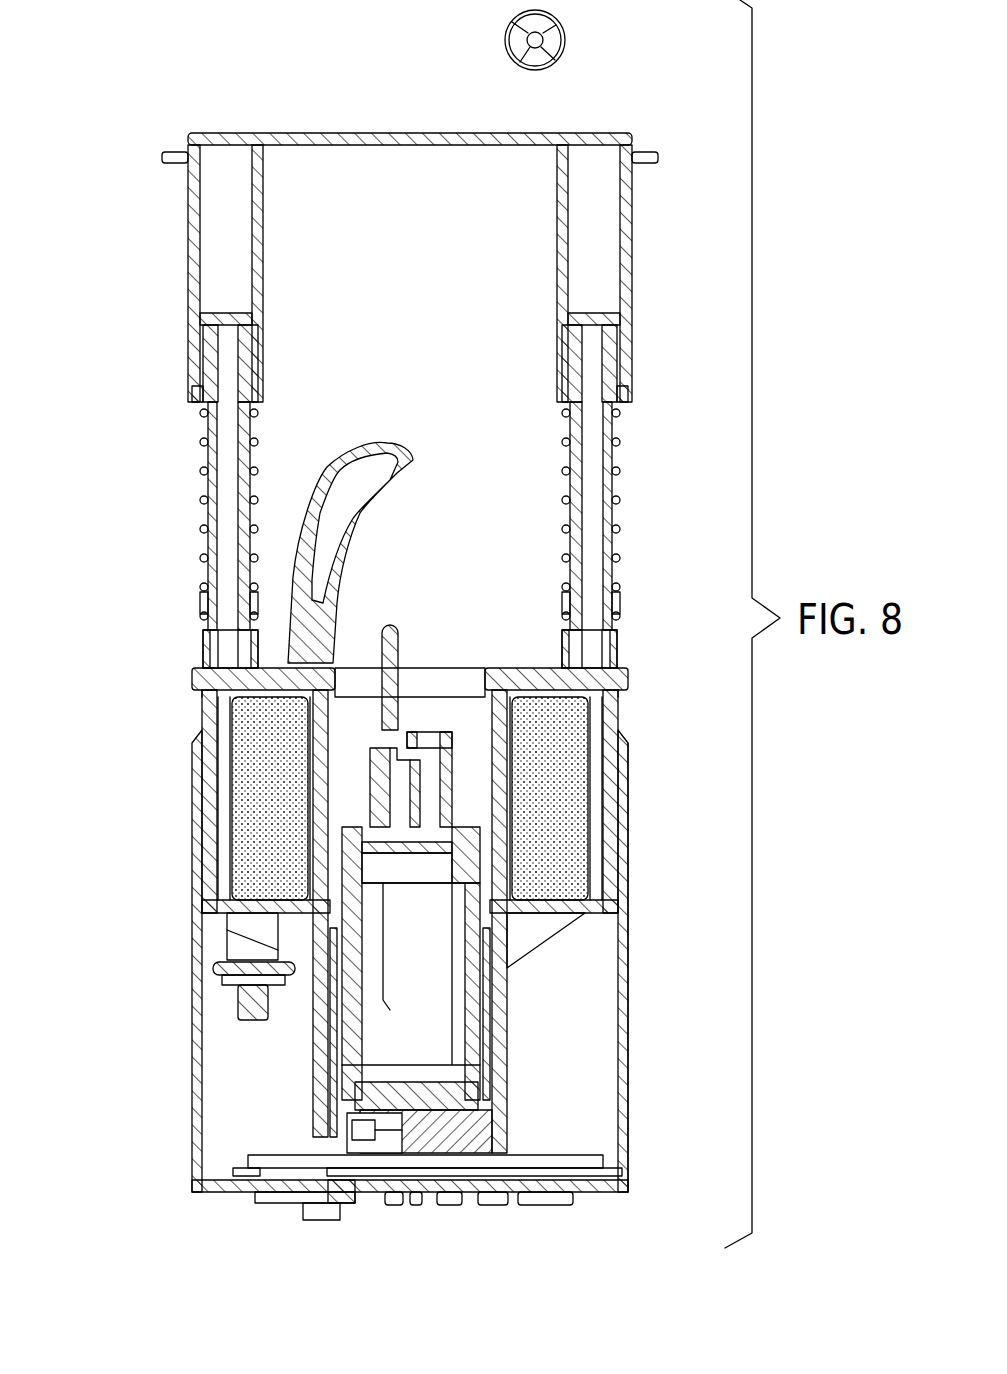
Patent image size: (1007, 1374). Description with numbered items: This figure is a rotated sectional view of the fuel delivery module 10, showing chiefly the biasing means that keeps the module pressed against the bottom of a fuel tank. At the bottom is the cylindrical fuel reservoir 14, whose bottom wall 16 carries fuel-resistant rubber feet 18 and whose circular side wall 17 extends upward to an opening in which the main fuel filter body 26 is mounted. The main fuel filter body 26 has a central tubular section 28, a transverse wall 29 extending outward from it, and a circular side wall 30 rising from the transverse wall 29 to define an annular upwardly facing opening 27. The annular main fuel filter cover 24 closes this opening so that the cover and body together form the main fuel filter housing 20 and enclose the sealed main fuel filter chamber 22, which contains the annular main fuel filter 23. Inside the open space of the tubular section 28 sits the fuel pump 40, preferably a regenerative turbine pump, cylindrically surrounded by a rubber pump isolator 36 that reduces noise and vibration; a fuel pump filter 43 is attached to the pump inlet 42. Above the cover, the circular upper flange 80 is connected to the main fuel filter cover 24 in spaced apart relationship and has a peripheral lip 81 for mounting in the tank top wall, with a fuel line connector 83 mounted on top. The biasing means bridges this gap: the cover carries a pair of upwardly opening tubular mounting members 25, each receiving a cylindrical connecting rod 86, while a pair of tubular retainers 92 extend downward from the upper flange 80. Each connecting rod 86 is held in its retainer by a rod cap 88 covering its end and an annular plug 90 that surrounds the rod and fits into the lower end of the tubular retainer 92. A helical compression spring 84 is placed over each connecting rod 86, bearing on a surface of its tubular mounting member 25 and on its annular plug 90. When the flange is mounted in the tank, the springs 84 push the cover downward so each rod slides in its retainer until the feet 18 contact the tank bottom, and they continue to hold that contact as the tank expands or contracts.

The fuel delivery module 10 is at (106, 885).
The fuel reservoir 14 is at (636, 1015).
The bottom wall 16 is at (222, 1192).
The side wall 17 is at (195, 1035).
The feet 18 is at (320, 1220).
The main fuel filter housing 20 is at (192, 720).
The main fuel filter chamber 22 is at (597, 848).
The main fuel filter 23 is at (592, 727).
The main fuel filter cover 24 is at (632, 669).
The tubular mounting members 25 is at (632, 627).
The main fuel filter body 26 is at (632, 706).
The annular upwardly facing opening 27 is at (228, 690).
The tubular section 28 is at (510, 998).
The transverse wall 29 is at (606, 921).
The side wall 30 is at (615, 730).
The pump isolator 36 is at (330, 1062).
The fuel pump 40 is at (378, 1020).
The inlet 42 is at (365, 1145).
The fuel pump filter 43 is at (548, 1152).
The upper flange 80 is at (372, 126).
The lip 81 is at (174, 152).
The fuel line connector 83 is at (582, 46).
The helical compression spring 84 is at (203, 520).
The connecting rod 86 is at (228, 470).
The rod cap 88 is at (218, 308).
The annular plug 90 is at (200, 405).
The tubular retainers 92 is at (190, 292).